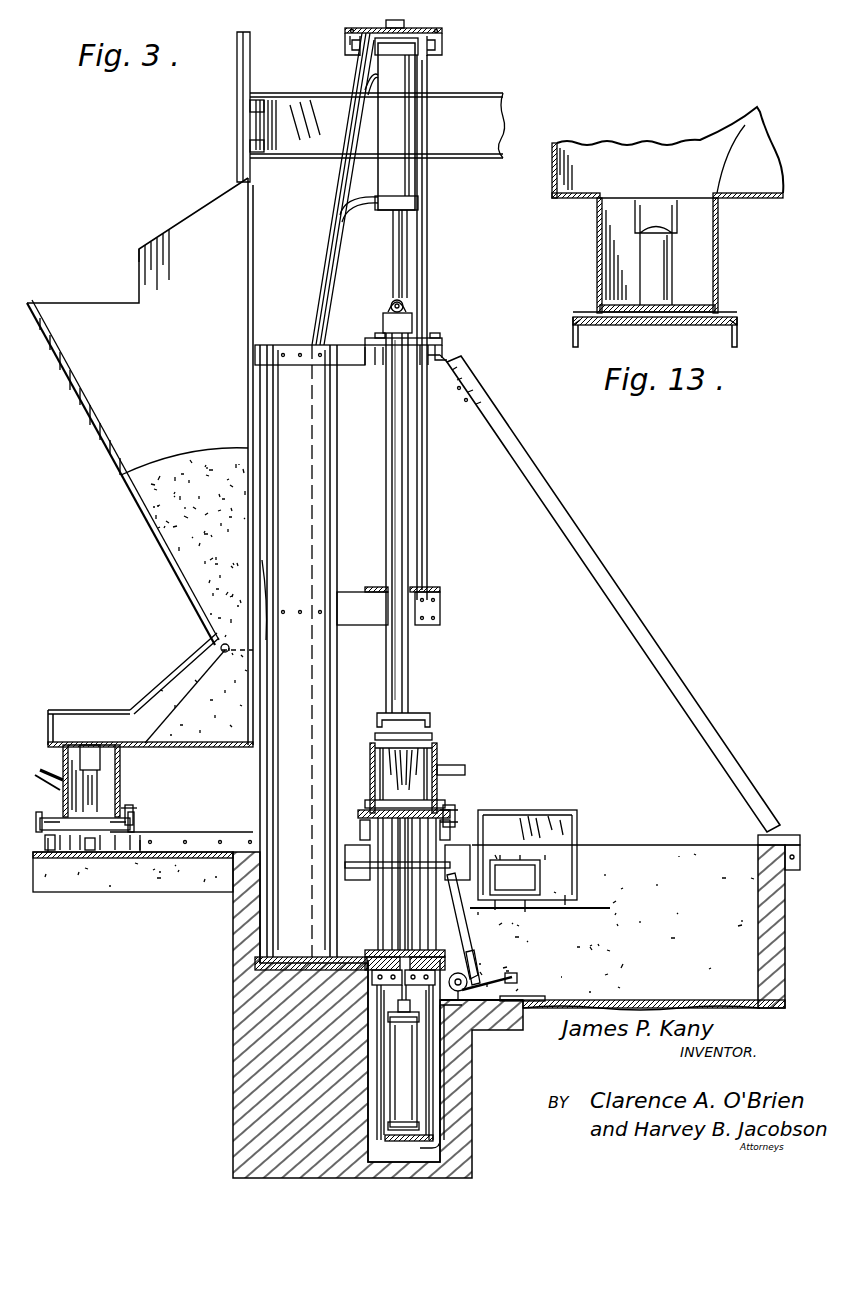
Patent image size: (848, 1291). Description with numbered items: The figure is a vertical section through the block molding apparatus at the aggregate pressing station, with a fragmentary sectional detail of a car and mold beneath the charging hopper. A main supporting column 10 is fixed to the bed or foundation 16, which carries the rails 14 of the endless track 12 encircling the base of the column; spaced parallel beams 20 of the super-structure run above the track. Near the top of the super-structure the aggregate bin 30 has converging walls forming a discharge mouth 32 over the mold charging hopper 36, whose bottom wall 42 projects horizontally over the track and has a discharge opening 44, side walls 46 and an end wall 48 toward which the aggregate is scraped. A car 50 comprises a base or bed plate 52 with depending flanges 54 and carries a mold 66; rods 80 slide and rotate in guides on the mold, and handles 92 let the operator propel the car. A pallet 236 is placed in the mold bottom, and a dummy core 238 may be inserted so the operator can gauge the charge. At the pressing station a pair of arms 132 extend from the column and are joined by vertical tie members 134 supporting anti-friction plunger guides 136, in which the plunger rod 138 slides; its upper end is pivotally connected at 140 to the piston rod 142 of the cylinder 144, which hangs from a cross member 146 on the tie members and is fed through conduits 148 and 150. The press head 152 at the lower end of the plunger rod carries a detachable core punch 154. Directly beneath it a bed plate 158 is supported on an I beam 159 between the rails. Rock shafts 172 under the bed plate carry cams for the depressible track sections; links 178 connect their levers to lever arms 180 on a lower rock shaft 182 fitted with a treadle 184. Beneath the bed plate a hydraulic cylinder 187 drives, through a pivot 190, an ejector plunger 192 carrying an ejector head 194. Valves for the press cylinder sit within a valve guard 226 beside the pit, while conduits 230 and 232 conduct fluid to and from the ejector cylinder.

In FIG. 3, the main supporting column 10 is at (325, 480).
In FIG. 3, the endless track 12 is at (184, 829).
In FIG. 3, the track rails 14 is at (48, 860).
In FIG. 3, the bed or foundation 16 is at (187, 878).
In FIG. 3, the beams 20 is at (490, 138).
In FIG. 3, the aggregate bin 30 is at (121, 475).
In FIG. 3, the discharge mouth 32 is at (220, 648).
In FIG. 3, the mold charging hopper 36 is at (216, 746).
In FIG. 13, the mold charging hopper 36 is at (726, 131).
In FIG. 3, the bottom wall 42 is at (165, 748).
In FIG. 13, the bottom wall 42 is at (765, 200).
In FIG. 3, the discharge opening 44 is at (120, 744).
In FIG. 13, the discharge opening 44 is at (628, 197).
In FIG. 3, the side walls 46 is at (168, 682).
In FIG. 3, the end wall 48 is at (52, 728).
In FIG. 13, the end wall 48 is at (552, 170).
In FIG. 3, the car 50 is at (139, 812).
In FIG. 13, the base or bed plate 52 is at (596, 326).
In FIG. 13, the depending flanges 54 is at (572, 340).
In FIG. 3, the mold 66 is at (54, 799).
In FIG. 13, the mold 66 is at (590, 246).
In FIG. 3, the rods 80 is at (100, 827).
In FIG. 3, the handles 92 is at (460, 768).
In FIG. 3, the arms 132 is at (360, 362).
In FIG. 3, the tie members 134 is at (428, 476).
In FIG. 3, the anti-friction plunger guides 136 is at (428, 326).
In FIG. 3, the plunger rod 138 is at (396, 510).
In FIG. 3, the pivotal connection 140 is at (410, 300).
In FIG. 3, the piston rod 142 is at (403, 250).
In FIG. 3, the cylinder 144 is at (398, 134).
In FIG. 3, the cross member 146 is at (402, 30).
In FIG. 3, the conduit 148 is at (350, 115).
In FIG. 3, the conduit 150 is at (355, 213).
In FIG. 3, the press head 152 is at (415, 712).
In FIG. 3, the core punch 154 is at (412, 740).
In FIG. 3, the bed plate 158 is at (380, 805).
In FIG. 3, the I beam 159 is at (400, 900).
In FIG. 3, the rock shafts 172 is at (378, 875).
In FIG. 3, the links 178 is at (468, 933).
In FIG. 3, the lever arms 180 is at (478, 962).
In FIG. 3, the rock shaft 182 is at (509, 1011).
In FIG. 3, the treadle 184 is at (508, 976).
In FIG. 3, the hydraulic cylinder 187 is at (398, 1072).
In FIG. 3, the pivotal connection 190 is at (388, 1015).
In FIG. 3, the ejector plunger 192 is at (400, 1000).
In FIG. 3, the ejector head 194 is at (362, 972).
In FIG. 3, the valve guard 226 is at (572, 824).
In FIG. 3, the conduit 230 is at (510, 997).
In FIG. 3, the conduit 232 is at (540, 1000).
In FIG. 3, the pallet 236 is at (412, 808).
In FIG. 3, the dummy core 238 is at (82, 750).
In FIG. 13, the dummy core 238 is at (678, 206).